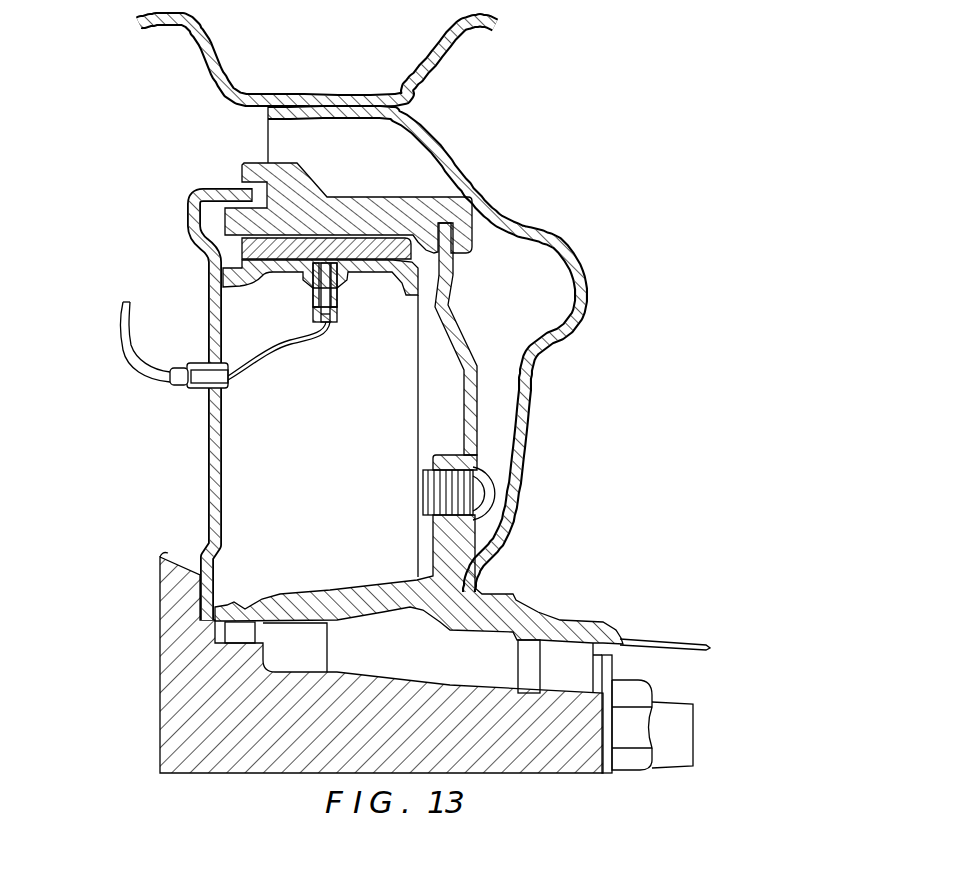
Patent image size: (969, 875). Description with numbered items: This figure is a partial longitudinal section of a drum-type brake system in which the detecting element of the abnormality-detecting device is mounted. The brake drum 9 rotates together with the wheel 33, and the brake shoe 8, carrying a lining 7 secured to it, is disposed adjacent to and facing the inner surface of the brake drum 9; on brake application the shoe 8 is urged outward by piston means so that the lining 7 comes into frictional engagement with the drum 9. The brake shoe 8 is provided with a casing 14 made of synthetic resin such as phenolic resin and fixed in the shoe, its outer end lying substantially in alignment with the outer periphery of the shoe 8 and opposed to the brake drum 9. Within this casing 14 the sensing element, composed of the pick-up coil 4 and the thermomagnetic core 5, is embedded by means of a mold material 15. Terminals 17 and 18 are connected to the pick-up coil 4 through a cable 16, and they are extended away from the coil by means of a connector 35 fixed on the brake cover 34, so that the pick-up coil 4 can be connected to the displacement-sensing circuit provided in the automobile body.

The wheel 33 is at (431, 62).
The brake drum 9 is at (367, 198).
The lining 7 is at (453, 279).
The brake shoe 8 is at (379, 273).
The pick-up coil 4 is at (313, 291).
The thermomagnetic core 5 is at (321, 301).
The casing 14 is at (340, 304).
The mold material 15 is at (336, 322).
The cable 16 is at (268, 361).
The connector 35 is at (186, 390).
The brake cover 34 is at (224, 453).
The terminal 17 is at (126, 300).
The terminal 18 is at (128, 300).